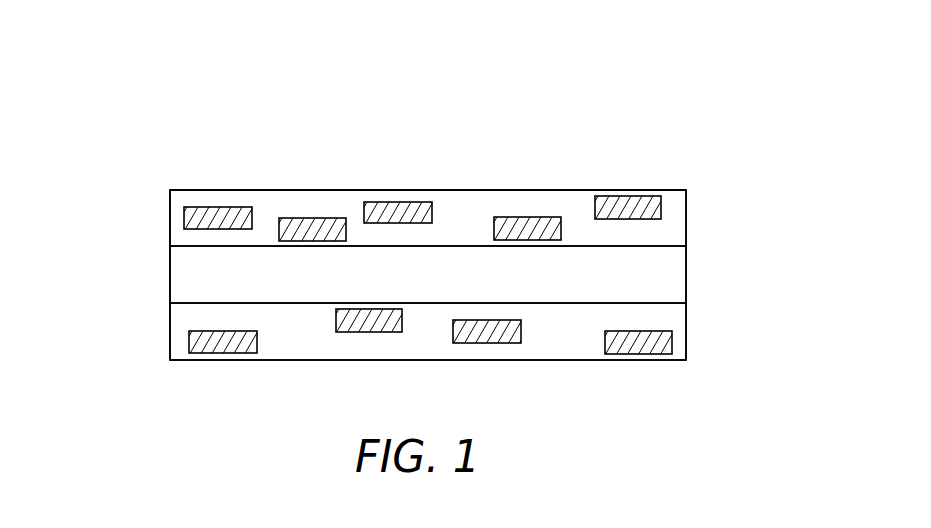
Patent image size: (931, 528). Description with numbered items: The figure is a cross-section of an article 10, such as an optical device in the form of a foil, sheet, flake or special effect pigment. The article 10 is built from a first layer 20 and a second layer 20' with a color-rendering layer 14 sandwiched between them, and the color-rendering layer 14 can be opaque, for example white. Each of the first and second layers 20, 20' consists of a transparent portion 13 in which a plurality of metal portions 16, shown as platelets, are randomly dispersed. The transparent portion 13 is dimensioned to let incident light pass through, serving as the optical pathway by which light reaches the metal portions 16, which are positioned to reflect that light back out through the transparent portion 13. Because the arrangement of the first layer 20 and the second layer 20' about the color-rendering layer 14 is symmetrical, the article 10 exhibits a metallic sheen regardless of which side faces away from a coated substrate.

The article 10 is at (100, 111).
The transparent portion 13 is at (463, 213).
The metal portion 16 is at (647, 203).
The first layer 20 is at (478, 221).
The color-rendering layer 14 is at (633, 286).
The second layer 20' is at (484, 331).